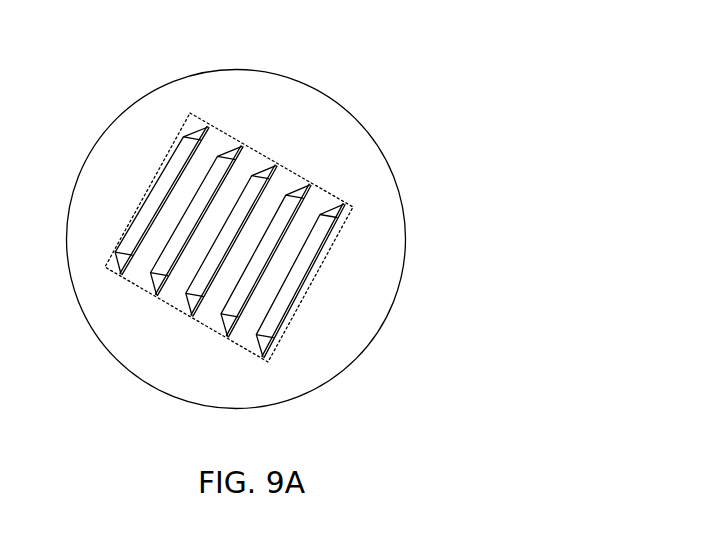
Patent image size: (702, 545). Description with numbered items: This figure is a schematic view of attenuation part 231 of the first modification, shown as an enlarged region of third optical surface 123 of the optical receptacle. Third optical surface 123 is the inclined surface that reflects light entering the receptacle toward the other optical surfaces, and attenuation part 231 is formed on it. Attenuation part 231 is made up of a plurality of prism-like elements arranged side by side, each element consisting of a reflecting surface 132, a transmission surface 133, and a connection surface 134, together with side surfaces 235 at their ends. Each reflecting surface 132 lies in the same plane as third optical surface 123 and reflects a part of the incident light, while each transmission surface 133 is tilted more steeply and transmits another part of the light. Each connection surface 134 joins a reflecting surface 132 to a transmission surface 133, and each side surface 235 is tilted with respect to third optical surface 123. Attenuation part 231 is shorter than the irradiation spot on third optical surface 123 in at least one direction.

The third optical surface 123 is at (362, 307).
The attenuation part 231 is at (478, 67).
The connection surface 134 is at (237, 182).
The reflecting surface 132 is at (262, 176).
The transmission surface 133 is at (306, 190).
The side surface 235 is at (342, 212).